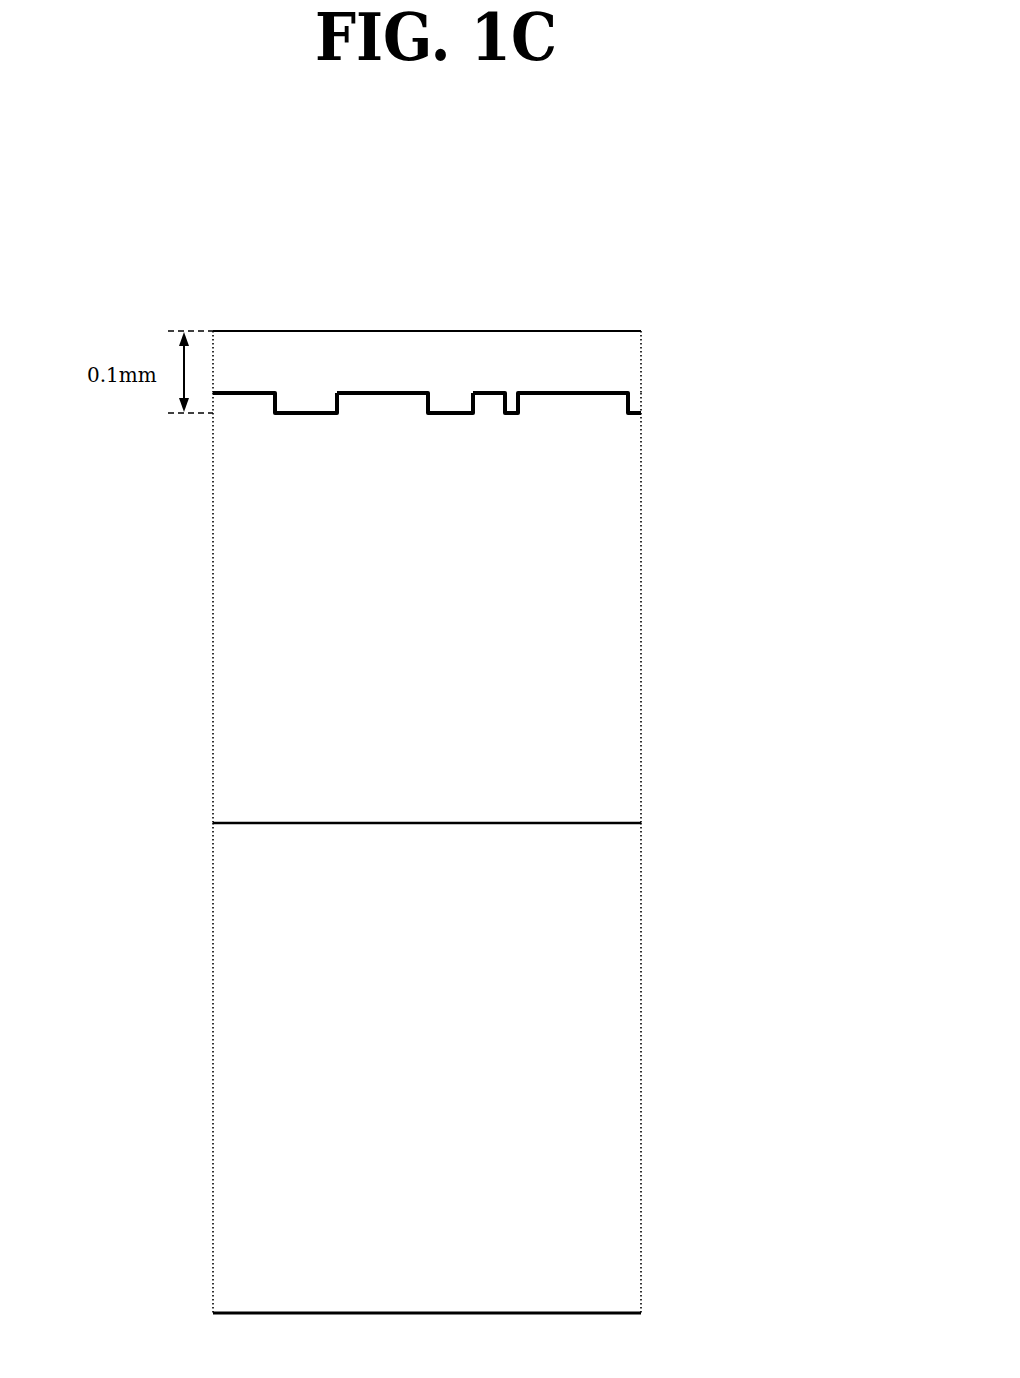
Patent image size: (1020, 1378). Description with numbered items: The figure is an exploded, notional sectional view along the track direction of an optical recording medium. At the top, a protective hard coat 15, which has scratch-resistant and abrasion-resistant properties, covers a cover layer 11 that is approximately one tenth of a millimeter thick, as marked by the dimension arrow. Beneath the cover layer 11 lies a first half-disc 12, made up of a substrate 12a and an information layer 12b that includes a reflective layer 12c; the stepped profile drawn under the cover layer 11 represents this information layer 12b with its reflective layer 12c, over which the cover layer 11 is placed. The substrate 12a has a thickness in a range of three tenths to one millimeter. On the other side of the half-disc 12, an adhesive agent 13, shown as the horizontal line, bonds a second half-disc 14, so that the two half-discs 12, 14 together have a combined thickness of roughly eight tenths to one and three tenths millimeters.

The cover layer 11 is at (627, 353).
The half-disc 12 is at (469, 550).
The substrate 12a is at (626, 598).
The information layer 12b is at (372, 405).
The reflective layer 12c is at (260, 392).
The adhesive agent 13 is at (641, 823).
The half-disc 14 is at (641, 1108).
The protective hard coat 15 is at (567, 331).